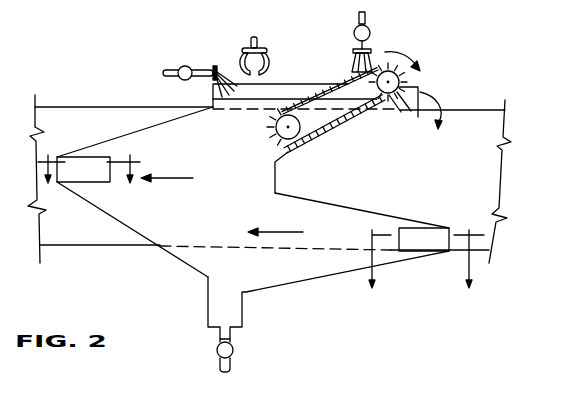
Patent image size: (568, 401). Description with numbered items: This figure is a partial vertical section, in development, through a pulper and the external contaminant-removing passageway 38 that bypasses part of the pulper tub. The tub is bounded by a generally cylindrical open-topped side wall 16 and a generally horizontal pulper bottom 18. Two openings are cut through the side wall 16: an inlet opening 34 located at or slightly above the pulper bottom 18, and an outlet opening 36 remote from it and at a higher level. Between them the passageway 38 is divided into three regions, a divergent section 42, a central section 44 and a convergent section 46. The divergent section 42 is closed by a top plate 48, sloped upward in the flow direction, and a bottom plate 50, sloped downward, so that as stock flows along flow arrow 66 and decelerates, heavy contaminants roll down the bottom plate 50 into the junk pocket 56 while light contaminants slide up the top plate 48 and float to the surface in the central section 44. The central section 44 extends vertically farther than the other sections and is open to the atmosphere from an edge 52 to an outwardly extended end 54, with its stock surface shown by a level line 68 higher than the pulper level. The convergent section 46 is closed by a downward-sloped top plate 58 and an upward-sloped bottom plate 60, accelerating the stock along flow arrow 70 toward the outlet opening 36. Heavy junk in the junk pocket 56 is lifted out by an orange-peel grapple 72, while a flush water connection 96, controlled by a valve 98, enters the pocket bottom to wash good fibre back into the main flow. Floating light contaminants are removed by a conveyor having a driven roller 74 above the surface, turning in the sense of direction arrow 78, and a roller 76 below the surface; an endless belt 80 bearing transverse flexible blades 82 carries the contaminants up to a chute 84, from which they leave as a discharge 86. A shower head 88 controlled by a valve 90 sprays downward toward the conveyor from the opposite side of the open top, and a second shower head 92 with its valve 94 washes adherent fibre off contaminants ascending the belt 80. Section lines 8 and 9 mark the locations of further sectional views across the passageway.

The section line 8- 8 is at (425, 270).
The section line 9- 9 is at (89, 179).
The side wall 16 is at (477, 183).
The pulper bottom 18 is at (100, 246).
The inlet opening 34 is at (431, 244).
The outlet opening 36 is at (95, 162).
The passageway 38 is at (181, 209).
The divergent section 42 is at (317, 214).
The central section 44 is at (230, 179).
The convergent section 46 is at (170, 151).
The top plate 48 is at (332, 200).
The bottom plate 50 is at (344, 275).
The edge 52 is at (213, 84).
The outwardly extended end 54 is at (420, 87).
The junk pocket 56 is at (208, 302).
The top plate 58 is at (132, 133).
The bottom plate 60 is at (102, 211).
The flow arrow 66 is at (275, 224).
The level line 68 is at (243, 100).
The flow arrow 70 is at (167, 171).
The orange-peel grapple 72 is at (262, 48).
The roller 74 is at (402, 74).
The roller 76 is at (275, 127).
The direction arrow 78 is at (402, 56).
The endless belt 80 is at (335, 95).
The transverse flexible blades 82 is at (314, 90).
The chute 84 is at (412, 108).
The discharge 86 is at (443, 114).
The shower head 88 is at (217, 67).
The valve 90 is at (189, 66).
The shower head 92 is at (354, 47).
The valve 94 is at (369, 27).
The flush water connection 96 is at (232, 337).
The valve 98 is at (234, 351).